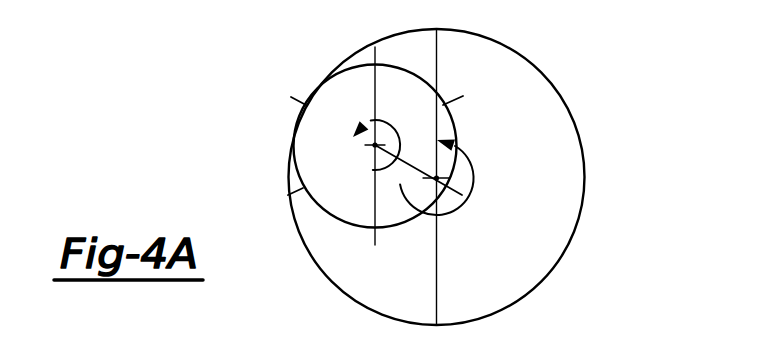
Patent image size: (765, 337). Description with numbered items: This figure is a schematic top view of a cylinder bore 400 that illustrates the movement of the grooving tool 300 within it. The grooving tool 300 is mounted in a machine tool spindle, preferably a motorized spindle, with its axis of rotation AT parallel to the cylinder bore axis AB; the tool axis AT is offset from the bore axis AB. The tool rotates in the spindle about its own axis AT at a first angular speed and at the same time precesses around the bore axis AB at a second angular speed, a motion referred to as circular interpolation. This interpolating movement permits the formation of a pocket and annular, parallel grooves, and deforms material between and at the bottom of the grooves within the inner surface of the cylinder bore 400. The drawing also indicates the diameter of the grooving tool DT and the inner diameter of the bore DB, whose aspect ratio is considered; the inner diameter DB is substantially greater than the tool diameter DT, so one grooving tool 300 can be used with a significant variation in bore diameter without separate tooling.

The grooving tool 300 is at (359, 143).
The cylinder bore 400 is at (452, 172).
The diameter of the grooving tool DT is at (376, 117).
The inner diameter of the bore DB is at (438, 312).
The tool axis of rotation AT is at (372, 152).
The cylinder bore axis AB is at (443, 198).